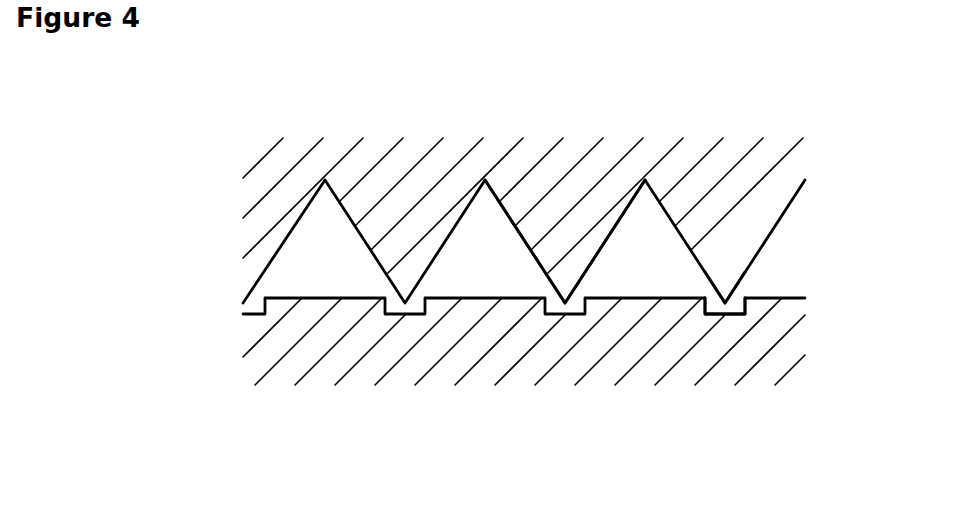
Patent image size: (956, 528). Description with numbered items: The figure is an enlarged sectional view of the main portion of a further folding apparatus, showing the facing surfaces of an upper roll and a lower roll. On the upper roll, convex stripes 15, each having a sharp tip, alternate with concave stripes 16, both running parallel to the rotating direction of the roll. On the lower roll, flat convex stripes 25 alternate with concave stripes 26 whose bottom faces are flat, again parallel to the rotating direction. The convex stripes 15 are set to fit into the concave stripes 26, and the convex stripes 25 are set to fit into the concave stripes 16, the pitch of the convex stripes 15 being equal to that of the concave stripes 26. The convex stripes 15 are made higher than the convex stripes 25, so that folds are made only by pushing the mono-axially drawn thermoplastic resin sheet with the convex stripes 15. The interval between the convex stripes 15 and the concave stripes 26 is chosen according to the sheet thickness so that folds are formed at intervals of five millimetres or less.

The concave stripes 16 is at (647, 180).
The convex stripes 15 is at (737, 288).
The convex stripes 25 is at (486, 300).
The concave stripes 26 is at (735, 315).